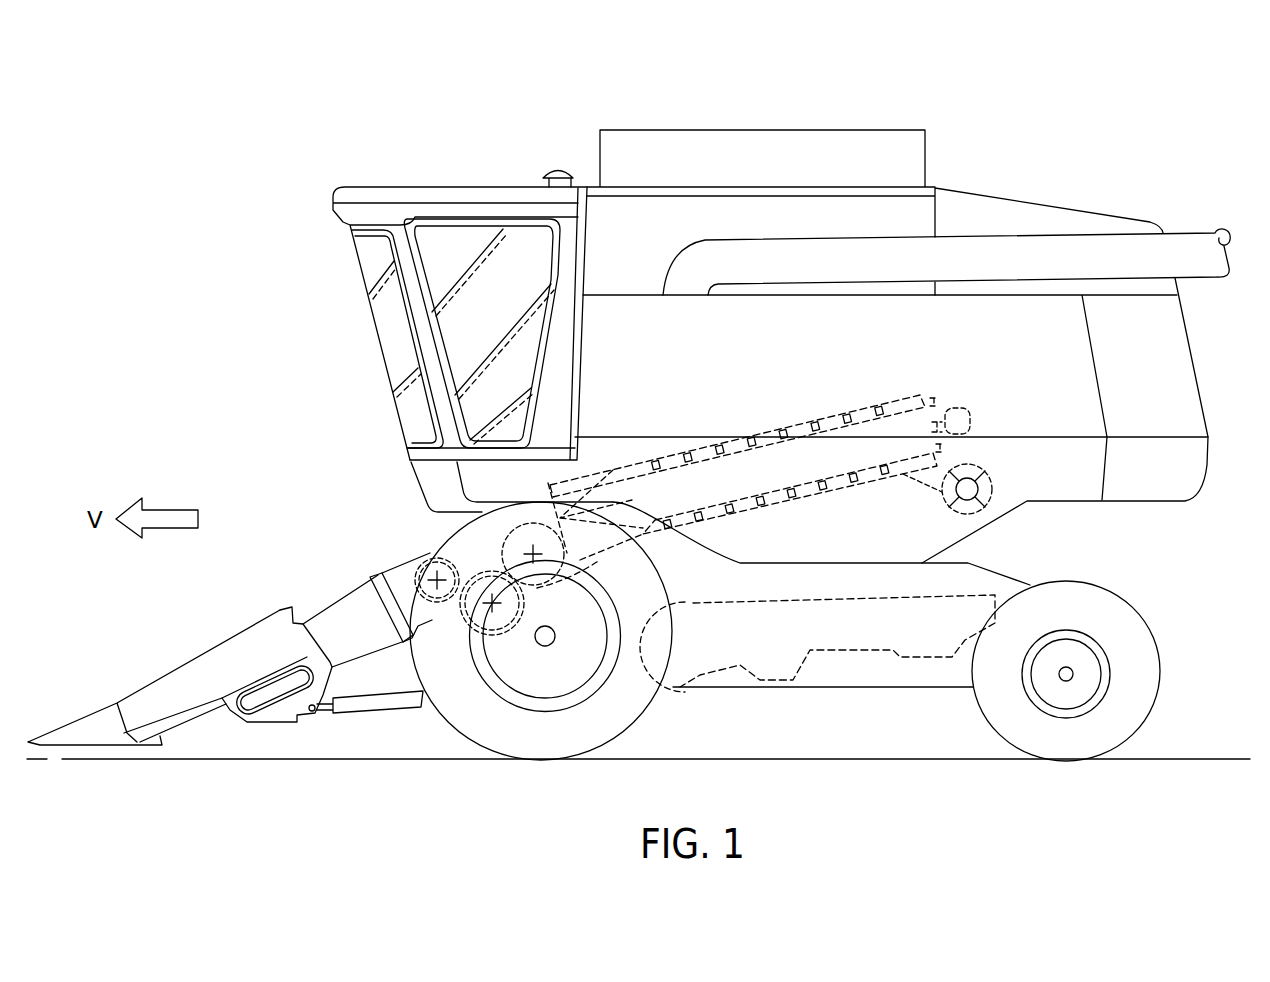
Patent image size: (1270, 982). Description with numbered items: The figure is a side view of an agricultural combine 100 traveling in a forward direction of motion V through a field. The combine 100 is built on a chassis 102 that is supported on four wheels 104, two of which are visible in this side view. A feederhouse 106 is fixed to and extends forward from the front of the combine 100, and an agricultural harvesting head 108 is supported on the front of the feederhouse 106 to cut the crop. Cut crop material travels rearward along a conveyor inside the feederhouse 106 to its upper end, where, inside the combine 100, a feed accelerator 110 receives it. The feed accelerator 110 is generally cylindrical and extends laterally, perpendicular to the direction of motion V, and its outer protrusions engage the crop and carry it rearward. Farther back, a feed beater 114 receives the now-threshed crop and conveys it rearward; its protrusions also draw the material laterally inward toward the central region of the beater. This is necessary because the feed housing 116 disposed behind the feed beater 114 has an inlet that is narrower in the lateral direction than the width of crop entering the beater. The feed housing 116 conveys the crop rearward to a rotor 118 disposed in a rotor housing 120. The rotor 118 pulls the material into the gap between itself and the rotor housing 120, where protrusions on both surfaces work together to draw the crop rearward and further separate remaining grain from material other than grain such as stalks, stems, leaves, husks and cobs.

The agricultural combine 100 is at (366, 139).
The chassis 102 is at (847, 688).
The wheels 104 is at (640, 737).
The feederhouse 106 is at (350, 593).
The agricultural harvesting head 108 is at (213, 650).
The feed accelerator 110 is at (467, 605).
The feed beater 114 is at (500, 540).
The feed housing 116 is at (600, 560).
The rotor 118 is at (717, 440).
The rotor housing 120 is at (810, 417).